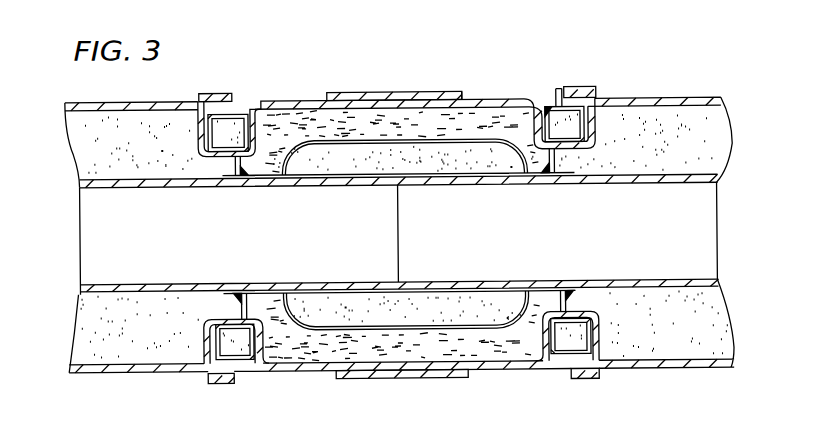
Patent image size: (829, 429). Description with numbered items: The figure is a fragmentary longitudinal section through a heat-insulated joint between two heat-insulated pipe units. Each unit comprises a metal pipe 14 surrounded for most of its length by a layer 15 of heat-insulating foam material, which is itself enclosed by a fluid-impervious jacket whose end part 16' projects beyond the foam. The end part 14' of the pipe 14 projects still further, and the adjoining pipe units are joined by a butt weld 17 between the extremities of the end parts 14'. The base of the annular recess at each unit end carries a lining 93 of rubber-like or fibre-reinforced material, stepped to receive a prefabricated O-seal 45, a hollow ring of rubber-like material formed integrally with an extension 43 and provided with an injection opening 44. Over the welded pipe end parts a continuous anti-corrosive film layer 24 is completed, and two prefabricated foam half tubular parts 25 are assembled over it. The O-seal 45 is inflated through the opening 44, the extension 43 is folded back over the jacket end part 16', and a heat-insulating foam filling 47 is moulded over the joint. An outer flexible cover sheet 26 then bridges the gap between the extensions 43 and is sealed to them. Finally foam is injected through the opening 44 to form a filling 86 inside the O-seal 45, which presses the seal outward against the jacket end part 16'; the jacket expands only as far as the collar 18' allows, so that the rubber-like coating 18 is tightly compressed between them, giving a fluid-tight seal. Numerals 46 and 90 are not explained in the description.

The metal pipe 14 is at (401, 306).
The end part of pipe 14' is at (399, 267).
The layer of heat-insulating foam material 15 is at (90, 118).
The end part of jacket 16' is at (610, 71).
The butt weld 17 is at (399, 205).
The rubber-like coating 18 is at (450, 232).
The collar 18' is at (219, 75).
The continuous film layer 24 is at (318, 178).
The half tubular parts 25 is at (312, 157).
The outer flexible cover sheet 26 is at (430, 92).
The extension 43 is at (463, 95).
The injection opening 44 is at (241, 109).
The O-seal 45 is at (193, 124).
The tray liner 46 is at (277, 106).
The heat-insulating foam filling 47 is at (542, 162).
The filling of heat-insulating foam material 86 is at (550, 115).
The damping layer 90 is at (358, 138).
The lining 93 is at (232, 163).